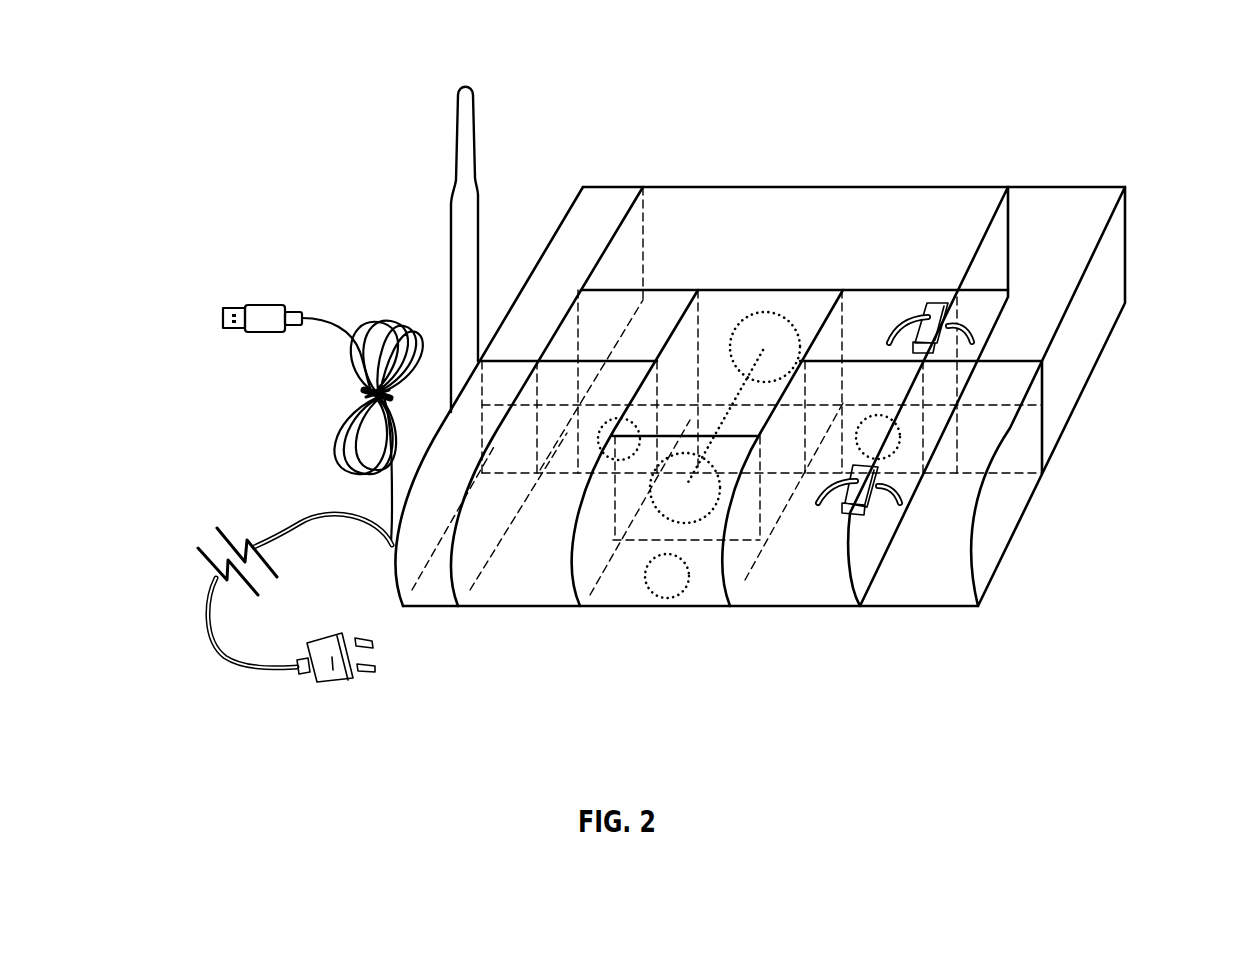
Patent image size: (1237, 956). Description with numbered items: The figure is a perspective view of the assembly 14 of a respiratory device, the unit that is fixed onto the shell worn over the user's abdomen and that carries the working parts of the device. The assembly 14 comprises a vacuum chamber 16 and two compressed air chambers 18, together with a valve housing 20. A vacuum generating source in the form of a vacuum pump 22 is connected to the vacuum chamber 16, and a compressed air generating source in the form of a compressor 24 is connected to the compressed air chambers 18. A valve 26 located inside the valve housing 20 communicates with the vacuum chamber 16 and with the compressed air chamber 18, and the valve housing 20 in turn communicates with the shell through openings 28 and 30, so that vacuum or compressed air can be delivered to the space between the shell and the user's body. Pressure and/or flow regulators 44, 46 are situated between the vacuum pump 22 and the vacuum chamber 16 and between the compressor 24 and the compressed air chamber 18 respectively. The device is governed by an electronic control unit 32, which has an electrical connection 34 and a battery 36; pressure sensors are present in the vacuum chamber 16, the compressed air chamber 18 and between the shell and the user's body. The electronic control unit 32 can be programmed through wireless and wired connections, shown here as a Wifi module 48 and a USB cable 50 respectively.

The assembly 14 is at (1103, 703).
The vacuum chamber 16 is at (850, 233).
The compressed air chambers 18 is at (523, 577).
The valve housing 20 is at (719, 358).
The vacuum pump 22 is at (1052, 215).
The compressor 24 is at (917, 582).
The valve 26 is at (778, 333).
The openings 28 is at (601, 437).
The opening 30 is at (668, 572).
The electronic control unit 32 is at (432, 583).
The electrical connection 34 is at (323, 686).
The battery 36 is at (605, 213).
The pressure and/or flow regulator 44 is at (933, 305).
The pressure and/or flow regulator 46 is at (855, 484).
The Wifi module 48 is at (462, 196).
The USB cable 50 is at (268, 317).